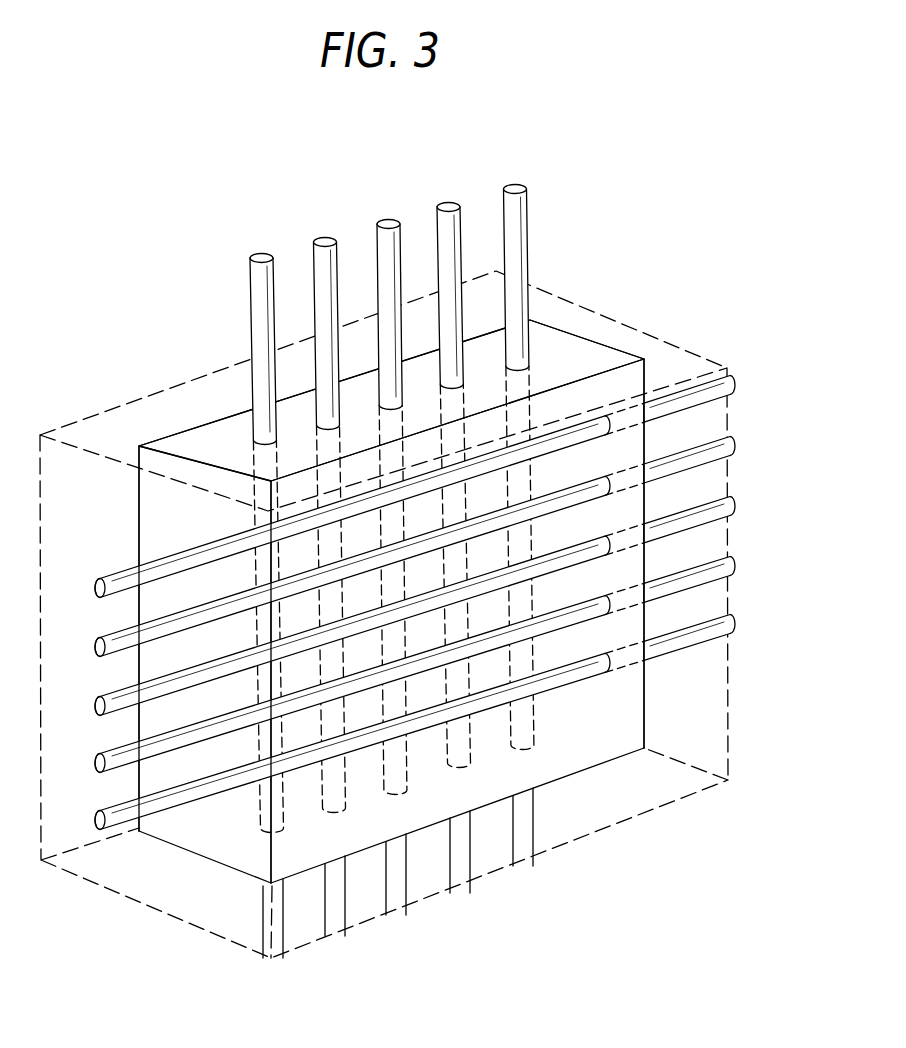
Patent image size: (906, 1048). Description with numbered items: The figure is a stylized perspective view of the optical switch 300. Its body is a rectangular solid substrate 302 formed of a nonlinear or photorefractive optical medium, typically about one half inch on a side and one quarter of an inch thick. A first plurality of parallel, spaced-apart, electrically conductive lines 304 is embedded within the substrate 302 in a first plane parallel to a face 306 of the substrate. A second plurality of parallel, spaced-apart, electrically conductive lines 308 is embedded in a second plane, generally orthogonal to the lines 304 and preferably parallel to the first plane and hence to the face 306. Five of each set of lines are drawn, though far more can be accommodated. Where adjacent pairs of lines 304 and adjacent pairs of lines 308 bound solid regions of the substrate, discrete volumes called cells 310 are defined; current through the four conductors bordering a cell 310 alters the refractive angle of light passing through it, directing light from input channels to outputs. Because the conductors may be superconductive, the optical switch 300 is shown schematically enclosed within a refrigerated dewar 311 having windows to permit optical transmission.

The optical switch 300 is at (608, 284).
The substrate 302 is at (622, 758).
The first plurality of electrically conductive lines 304 is at (388, 219).
The face 306 is at (633, 706).
The second plurality of electrically conductive lines 308 is at (731, 503).
The cells 310 is at (357, 537).
The refrigerated dewar 311 is at (52, 786).